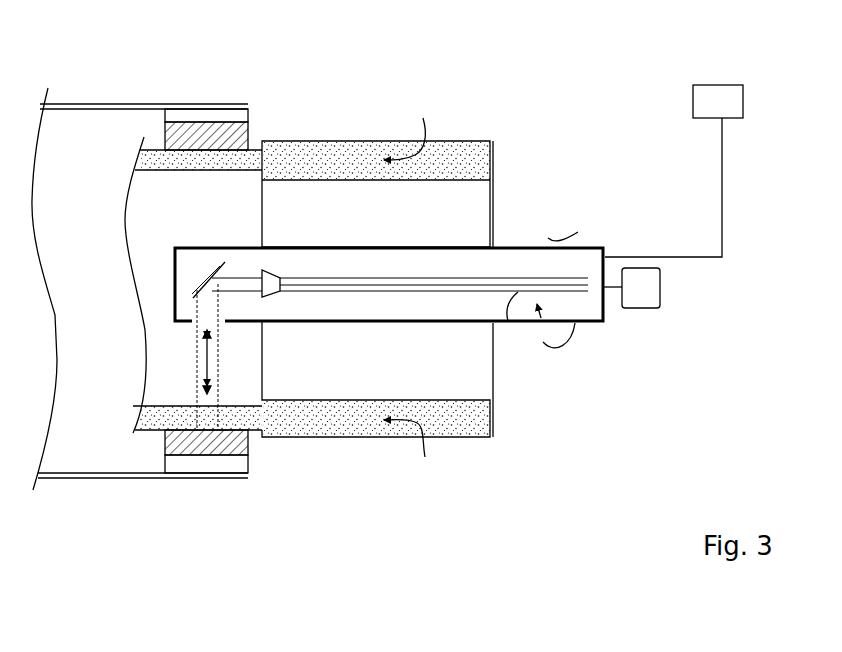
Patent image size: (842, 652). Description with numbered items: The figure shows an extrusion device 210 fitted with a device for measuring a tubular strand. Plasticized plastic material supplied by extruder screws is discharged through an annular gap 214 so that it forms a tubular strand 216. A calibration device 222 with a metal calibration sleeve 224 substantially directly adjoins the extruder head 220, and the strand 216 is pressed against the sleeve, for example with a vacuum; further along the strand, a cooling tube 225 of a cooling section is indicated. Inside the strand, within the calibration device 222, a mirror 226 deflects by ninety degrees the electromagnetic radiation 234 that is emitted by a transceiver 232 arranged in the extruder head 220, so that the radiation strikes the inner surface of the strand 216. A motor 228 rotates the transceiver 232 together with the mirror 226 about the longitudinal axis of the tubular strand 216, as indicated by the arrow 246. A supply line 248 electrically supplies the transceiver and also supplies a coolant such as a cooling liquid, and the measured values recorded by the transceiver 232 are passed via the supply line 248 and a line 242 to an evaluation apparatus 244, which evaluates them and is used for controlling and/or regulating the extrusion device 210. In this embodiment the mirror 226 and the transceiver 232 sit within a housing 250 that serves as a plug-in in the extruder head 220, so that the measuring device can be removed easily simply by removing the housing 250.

The extrusion device 210 is at (395, 237).
The annular gap 214 is at (257, 418).
The tubular strand 216 is at (150, 162).
The extruder head 220 is at (288, 152).
The calibration device 222 is at (188, 116).
The metal calibration sleeve 224 is at (215, 135).
The cooling tube 225 is at (48, 104).
The mirror 226 is at (205, 275).
The motor 228 is at (660, 296).
The transceiver 232 is at (278, 275).
The electromagnetic radiation 234 is at (207, 368).
The line 242 is at (722, 195).
The evaluation apparatus 244 is at (718, 101).
The arrow 246 is at (578, 232).
The supply line 248 is at (518, 292).
The housing 250 is at (517, 328).